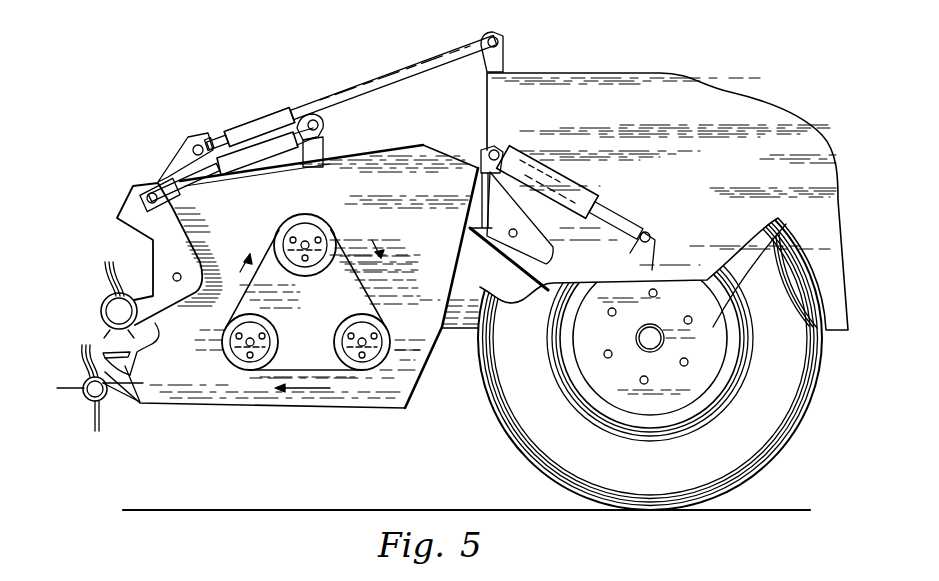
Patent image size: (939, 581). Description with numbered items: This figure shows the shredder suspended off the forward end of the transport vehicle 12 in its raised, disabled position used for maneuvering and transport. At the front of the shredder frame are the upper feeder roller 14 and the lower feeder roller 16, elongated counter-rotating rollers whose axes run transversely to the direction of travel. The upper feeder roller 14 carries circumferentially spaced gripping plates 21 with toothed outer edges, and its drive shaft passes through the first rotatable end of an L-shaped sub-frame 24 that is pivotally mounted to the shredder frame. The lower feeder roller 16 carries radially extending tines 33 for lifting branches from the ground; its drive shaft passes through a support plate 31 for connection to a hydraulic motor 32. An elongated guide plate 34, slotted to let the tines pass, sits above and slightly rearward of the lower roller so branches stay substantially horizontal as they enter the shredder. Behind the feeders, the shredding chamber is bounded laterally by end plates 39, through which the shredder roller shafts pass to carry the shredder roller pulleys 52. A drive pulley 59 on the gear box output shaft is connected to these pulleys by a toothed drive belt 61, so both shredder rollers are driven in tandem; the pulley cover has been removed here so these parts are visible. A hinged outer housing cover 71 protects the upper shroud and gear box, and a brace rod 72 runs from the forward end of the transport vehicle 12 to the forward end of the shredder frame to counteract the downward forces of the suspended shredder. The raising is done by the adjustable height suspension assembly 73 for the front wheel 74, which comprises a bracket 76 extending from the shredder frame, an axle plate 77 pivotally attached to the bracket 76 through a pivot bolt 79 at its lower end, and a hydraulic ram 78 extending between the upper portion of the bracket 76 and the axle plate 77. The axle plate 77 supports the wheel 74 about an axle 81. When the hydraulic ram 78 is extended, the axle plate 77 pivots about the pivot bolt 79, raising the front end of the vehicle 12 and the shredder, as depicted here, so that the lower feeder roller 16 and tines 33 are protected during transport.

The transport vehicle 12 is at (617, 73).
The upper feeder roller 14 is at (95, 322).
The lower feeder roller 16 is at (86, 400).
The gripping plates 21 is at (97, 305).
The L-shaped sub-frame 24 is at (148, 232).
The support plate 31 is at (135, 405).
The hydraulic motor 32 is at (100, 400).
The tines 33 is at (70, 373).
The guide plate 34 is at (133, 373).
The lateral end plates 39 is at (415, 378).
The shredder roller pulleys 52 is at (372, 337).
The drive pulley 59 is at (310, 238).
The toothed drive belt 61 is at (333, 373).
The outer housing cover 71 is at (395, 150).
The brace rod 72 is at (369, 80).
The adjustable height suspension assembly 73 is at (705, 168).
The front wheel 74 is at (783, 237).
The bracket 76 is at (536, 283).
The axle plate 77 is at (650, 260).
The hydraulic ram 78 is at (575, 175).
The pivot bolt 79 is at (481, 185).
The axle 81 is at (653, 343).